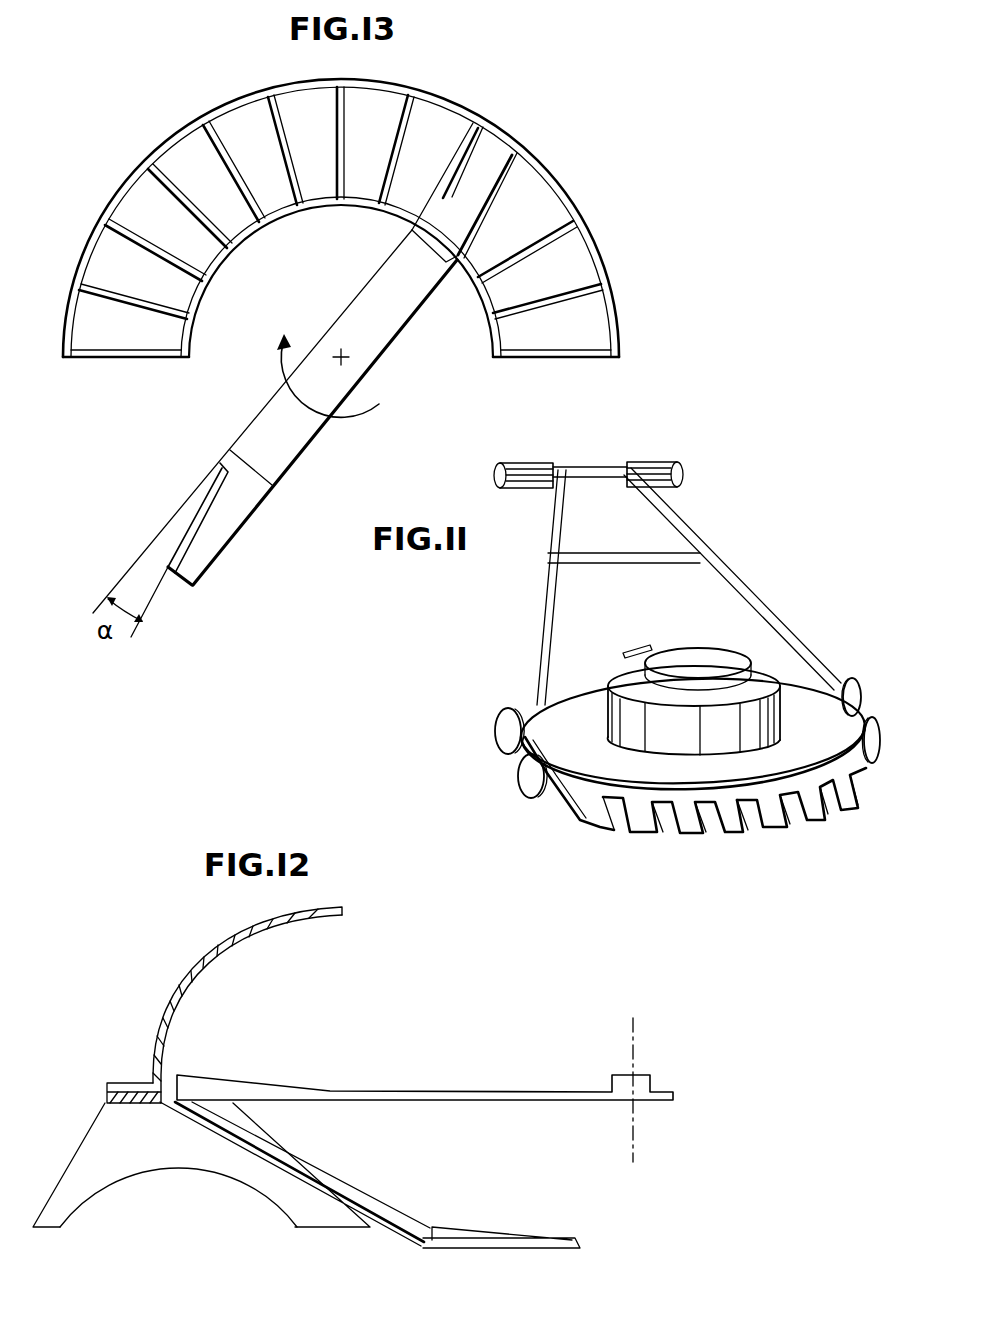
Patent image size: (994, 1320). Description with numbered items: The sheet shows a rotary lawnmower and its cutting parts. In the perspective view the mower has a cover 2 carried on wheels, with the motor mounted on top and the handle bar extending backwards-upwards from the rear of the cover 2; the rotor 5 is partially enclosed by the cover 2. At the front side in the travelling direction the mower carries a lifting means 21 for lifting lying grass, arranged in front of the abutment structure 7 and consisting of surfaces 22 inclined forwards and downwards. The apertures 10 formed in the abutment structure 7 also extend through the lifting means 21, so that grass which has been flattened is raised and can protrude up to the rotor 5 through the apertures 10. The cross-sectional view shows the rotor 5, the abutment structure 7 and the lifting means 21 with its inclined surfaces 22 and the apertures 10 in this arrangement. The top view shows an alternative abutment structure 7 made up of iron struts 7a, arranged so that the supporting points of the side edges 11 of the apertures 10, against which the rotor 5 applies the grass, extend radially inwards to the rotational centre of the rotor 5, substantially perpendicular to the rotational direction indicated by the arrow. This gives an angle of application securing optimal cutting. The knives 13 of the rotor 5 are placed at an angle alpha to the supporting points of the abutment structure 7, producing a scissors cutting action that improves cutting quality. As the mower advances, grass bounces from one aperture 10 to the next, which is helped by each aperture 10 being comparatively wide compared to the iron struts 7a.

In FIG. 12, the cover 2 is at (183, 990).
In FIG. 13, the rotor 5 is at (283, 445).
In FIG. 12, the rotor 5 is at (425, 1092).
In FIG. 13, the abutment structure 7 is at (160, 148).
In FIG. 12, the abutment structure 7 is at (223, 1140).
In FIG. 13, the iron struts 7a is at (177, 193).
In FIG. 13, the apertures 10 is at (428, 152).
In FIG. 11, the apertures 10 is at (795, 815).
In FIG. 12, the apertures 10 is at (117, 1150).
In FIG. 13, the side edges 11 is at (277, 140).
In FIG. 13, the knives 13 is at (478, 220).
In FIG. 12, the knives 13 is at (290, 1172).
In FIG. 11, the lifting means 21 is at (847, 808).
In FIG. 11, the surfaces 22 is at (667, 835).
In FIG. 12, the surfaces 22 is at (80, 1143).